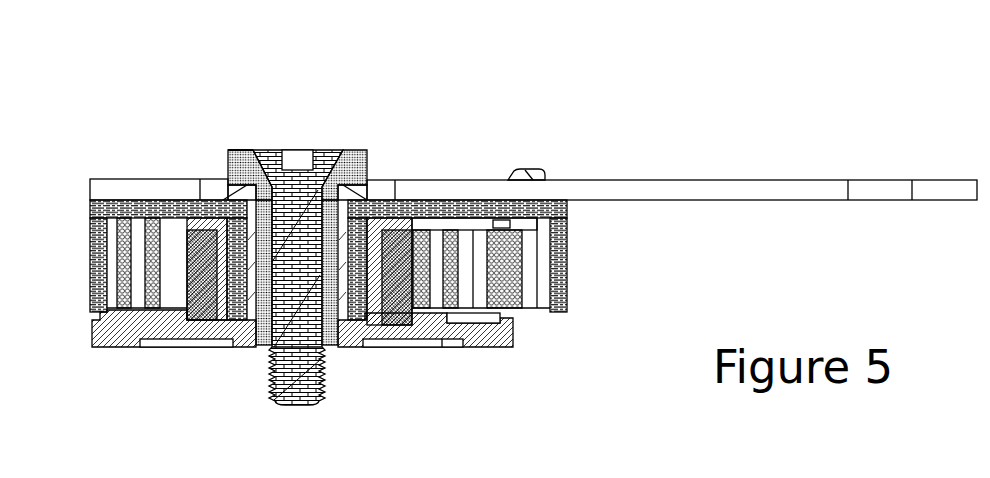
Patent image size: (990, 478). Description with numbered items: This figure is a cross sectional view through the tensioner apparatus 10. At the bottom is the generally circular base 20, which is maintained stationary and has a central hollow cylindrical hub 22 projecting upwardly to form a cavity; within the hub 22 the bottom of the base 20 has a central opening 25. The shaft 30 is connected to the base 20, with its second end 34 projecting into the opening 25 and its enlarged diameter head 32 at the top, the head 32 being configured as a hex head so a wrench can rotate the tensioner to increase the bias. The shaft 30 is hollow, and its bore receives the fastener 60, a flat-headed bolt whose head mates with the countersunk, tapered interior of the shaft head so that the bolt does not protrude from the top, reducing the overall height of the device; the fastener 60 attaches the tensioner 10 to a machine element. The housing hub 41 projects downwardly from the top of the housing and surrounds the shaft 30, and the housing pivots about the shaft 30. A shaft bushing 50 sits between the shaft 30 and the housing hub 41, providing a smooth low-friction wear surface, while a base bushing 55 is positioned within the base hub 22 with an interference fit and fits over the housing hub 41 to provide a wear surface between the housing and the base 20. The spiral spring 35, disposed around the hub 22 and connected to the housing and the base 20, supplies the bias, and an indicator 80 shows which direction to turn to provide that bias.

The tensioner apparatus 10 is at (689, 98).
The base 20 is at (513, 338).
The hub 22 is at (190, 246).
The central opening 25 is at (336, 338).
The shaft 30 is at (363, 162).
The enlarged diameter head 32 is at (235, 163).
The second end 34 is at (267, 335).
The spring 35 is at (123, 260).
The housing hub 41 is at (363, 315).
The shaft bushing 50 is at (230, 193).
The base bushing 55 is at (217, 300).
The fastener 60 is at (326, 152).
The indicator 80 is at (527, 170).